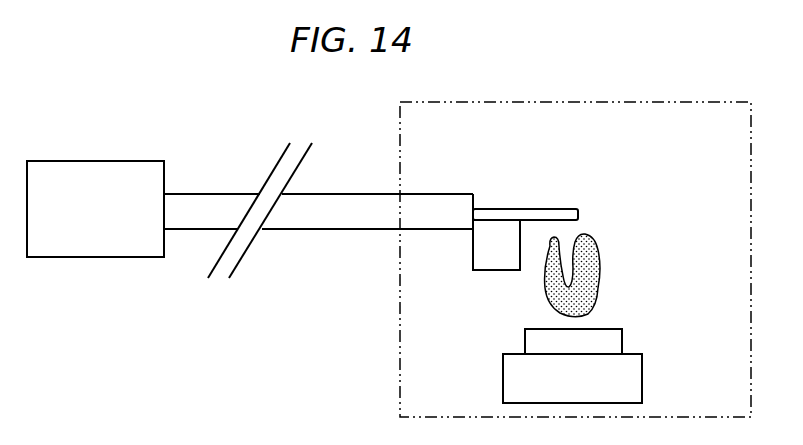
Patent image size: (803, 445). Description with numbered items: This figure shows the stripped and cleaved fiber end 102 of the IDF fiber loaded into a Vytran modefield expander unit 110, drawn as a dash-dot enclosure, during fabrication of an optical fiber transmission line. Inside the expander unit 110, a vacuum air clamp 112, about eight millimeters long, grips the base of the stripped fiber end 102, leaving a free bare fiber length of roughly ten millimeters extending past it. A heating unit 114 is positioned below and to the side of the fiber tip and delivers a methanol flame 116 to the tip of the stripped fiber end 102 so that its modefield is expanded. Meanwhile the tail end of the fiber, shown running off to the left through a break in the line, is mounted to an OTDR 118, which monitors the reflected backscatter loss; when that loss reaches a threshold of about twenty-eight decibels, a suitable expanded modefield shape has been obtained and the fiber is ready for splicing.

The modefield expander unit 110 is at (638, 102).
The OTDR 118 is at (127, 161).
The stripped fiber end 102 is at (553, 208).
The vacuum air clamp 112 is at (483, 270).
The methanol flame 116 is at (600, 265).
The heating unit 114 is at (642, 337).